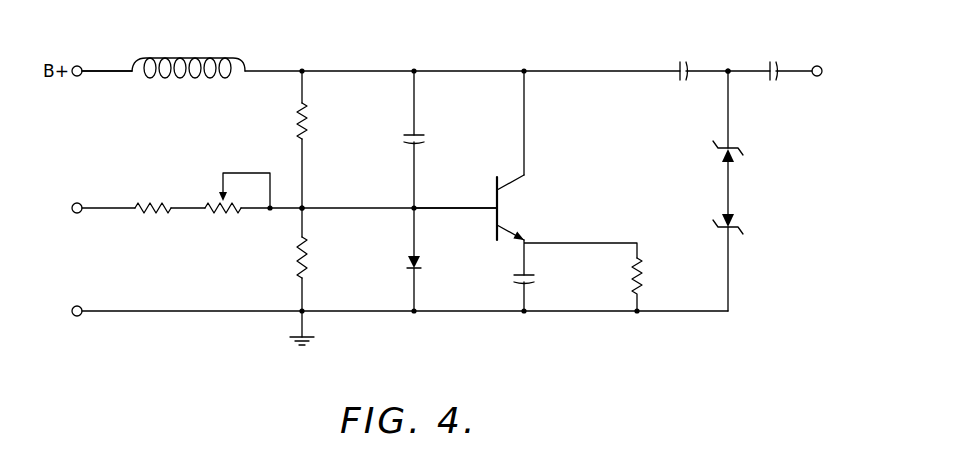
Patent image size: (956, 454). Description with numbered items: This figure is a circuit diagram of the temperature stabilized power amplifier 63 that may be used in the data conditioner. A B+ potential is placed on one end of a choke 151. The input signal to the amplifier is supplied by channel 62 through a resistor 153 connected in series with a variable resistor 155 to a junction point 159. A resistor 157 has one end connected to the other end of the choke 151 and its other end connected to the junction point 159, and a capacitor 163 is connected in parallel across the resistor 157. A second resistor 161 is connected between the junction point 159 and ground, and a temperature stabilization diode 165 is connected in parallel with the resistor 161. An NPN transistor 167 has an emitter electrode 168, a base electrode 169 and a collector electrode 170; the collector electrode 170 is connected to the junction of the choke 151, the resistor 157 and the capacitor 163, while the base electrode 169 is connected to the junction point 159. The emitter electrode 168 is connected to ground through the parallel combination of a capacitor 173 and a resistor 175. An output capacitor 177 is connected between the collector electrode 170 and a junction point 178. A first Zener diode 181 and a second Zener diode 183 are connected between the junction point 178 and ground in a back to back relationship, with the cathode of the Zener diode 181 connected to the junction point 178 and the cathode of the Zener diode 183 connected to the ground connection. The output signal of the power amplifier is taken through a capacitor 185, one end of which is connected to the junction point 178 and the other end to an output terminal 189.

The channel 62 is at (72, 209).
The power amplifier 63 is at (463, 56).
The choke 151 is at (196, 79).
The resistor 153 is at (164, 214).
The variable resistor 155 is at (219, 194).
The resistor 157 is at (306, 128).
The junction point 159 is at (305, 206).
The second resistor 161 is at (296, 258).
The capacitor 163 is at (425, 141).
The temperature stabilization diode 165 is at (404, 264).
The NPN transistor 167 is at (505, 209).
The emitter electrode 168 is at (505, 238).
The base electrode 169 is at (473, 206).
The collector electrode 170 is at (529, 142).
The capacitor 173 is at (535, 279).
The resistor 175 is at (643, 286).
The output capacitor 177 is at (682, 82).
The junction point 178 is at (736, 50).
The first Zener diode 181 is at (739, 162).
The second Zener diode 183 is at (740, 229).
The capacitor 185 is at (775, 83).
The output terminal 189 is at (823, 71).